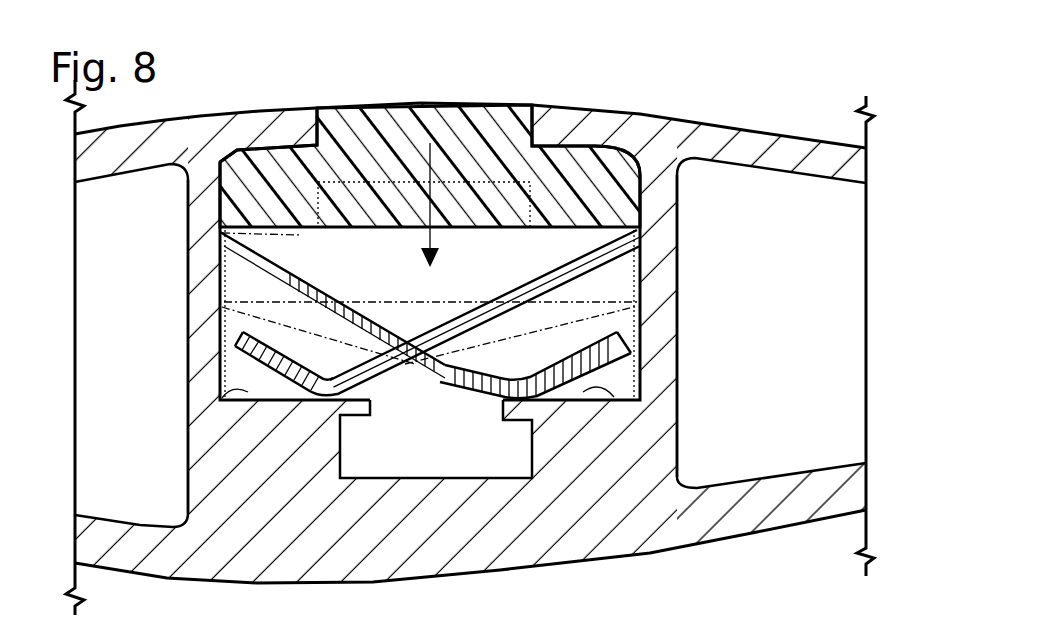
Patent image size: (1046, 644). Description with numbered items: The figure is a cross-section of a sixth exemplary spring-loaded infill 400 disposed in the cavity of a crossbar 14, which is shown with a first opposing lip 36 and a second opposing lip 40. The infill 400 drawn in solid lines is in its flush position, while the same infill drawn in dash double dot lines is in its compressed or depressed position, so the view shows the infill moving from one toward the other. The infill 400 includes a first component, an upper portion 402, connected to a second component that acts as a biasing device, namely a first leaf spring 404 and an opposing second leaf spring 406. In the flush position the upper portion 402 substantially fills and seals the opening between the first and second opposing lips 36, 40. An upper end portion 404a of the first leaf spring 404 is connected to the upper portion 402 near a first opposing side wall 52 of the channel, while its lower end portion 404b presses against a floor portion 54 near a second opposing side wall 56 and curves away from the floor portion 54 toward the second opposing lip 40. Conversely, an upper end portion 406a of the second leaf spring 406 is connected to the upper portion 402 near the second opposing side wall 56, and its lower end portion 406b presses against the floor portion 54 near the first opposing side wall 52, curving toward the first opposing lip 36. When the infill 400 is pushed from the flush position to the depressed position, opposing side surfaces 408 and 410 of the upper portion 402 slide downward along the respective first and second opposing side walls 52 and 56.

The crossbar 14 is at (797, 138).
The first opposing lip 36 is at (240, 148).
The second opposing lip 40 is at (564, 110).
The first opposing side wall 52 is at (188, 260).
The floor portion 54 is at (215, 400).
The second opposing side wall 56 is at (678, 282).
The infill 400 is at (485, 57).
The upper portion 402 is at (396, 105).
The first leaf spring 404 is at (436, 299).
The upper end portion of first leaf spring 404a is at (243, 253).
The lower end portion of first leaf spring 404b is at (633, 396).
The second leaf spring 406 is at (424, 307).
The upper end portion of second leaf spring 406a is at (618, 262).
The lower end portion of second leaf spring 406b is at (246, 367).
The first side surface 408 is at (216, 201).
The second side surface 410 is at (640, 196).